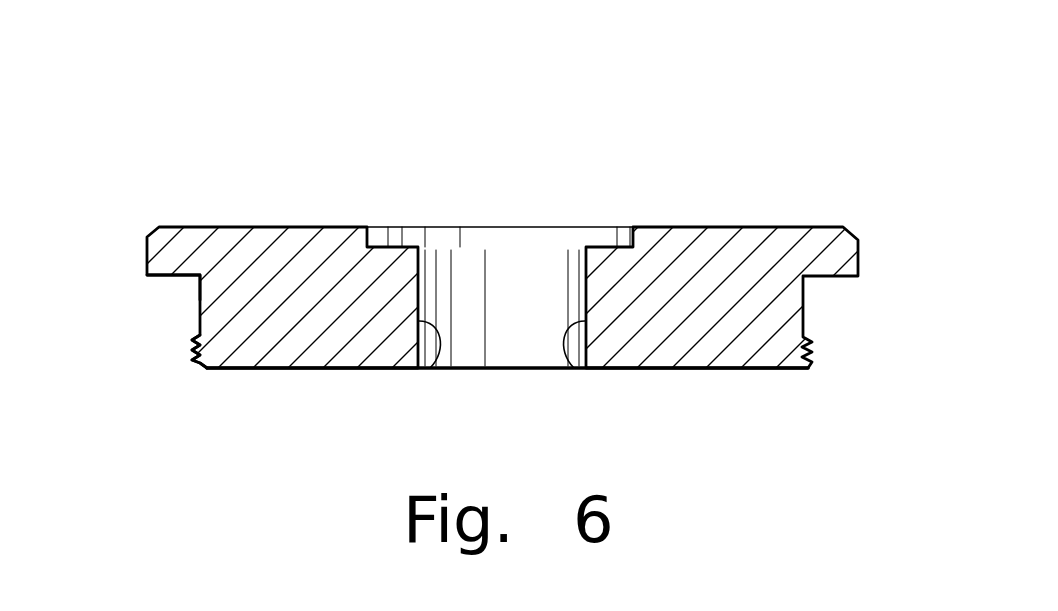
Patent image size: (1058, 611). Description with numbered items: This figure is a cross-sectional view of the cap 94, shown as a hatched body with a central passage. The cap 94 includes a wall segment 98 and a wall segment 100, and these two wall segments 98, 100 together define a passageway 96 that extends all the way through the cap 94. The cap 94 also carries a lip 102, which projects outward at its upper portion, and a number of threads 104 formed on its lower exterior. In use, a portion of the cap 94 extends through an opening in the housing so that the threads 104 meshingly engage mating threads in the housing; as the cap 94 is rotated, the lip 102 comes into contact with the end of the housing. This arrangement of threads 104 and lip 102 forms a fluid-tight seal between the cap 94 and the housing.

The cap 94 is at (747, 130).
The passageway 96 is at (577, 368).
The wall segment 98 is at (430, 368).
The wall segment 100 is at (372, 243).
The lip 102 is at (184, 276).
The threads 104 is at (190, 351).